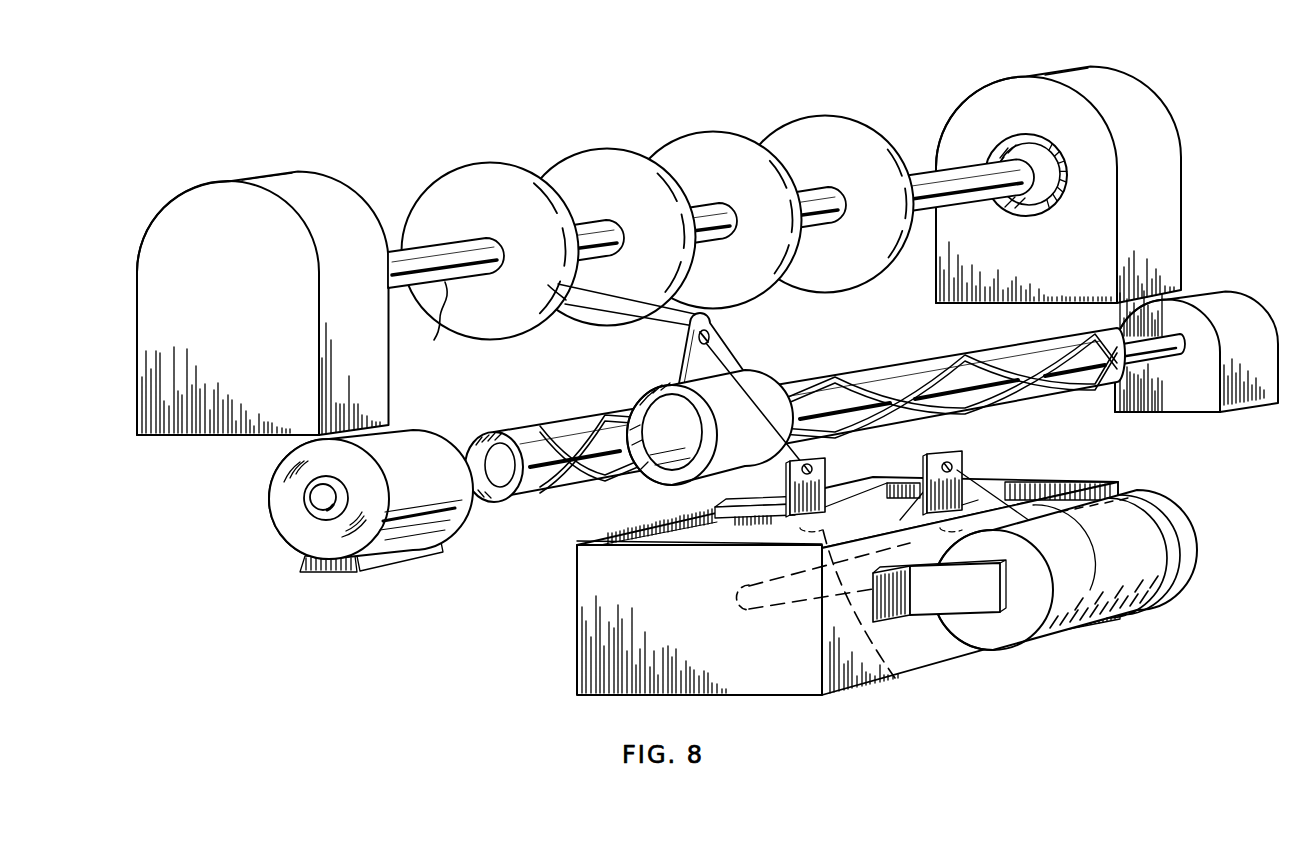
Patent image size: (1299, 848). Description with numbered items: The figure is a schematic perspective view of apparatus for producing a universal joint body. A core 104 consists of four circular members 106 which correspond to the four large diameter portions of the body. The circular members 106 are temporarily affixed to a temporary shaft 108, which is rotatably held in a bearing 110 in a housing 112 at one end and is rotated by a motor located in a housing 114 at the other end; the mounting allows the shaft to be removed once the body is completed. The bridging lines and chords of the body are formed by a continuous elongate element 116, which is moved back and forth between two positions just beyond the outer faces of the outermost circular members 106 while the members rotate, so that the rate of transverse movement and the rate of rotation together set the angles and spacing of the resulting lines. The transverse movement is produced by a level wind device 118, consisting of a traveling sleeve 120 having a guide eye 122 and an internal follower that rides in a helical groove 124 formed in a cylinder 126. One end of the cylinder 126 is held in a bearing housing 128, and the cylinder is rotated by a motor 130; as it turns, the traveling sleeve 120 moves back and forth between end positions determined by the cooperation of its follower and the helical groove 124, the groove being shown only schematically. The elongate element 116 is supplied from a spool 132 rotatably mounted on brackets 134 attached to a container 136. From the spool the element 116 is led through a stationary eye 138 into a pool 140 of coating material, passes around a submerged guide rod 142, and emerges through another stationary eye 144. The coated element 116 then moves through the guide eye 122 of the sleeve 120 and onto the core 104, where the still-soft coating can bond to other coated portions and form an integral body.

The core 104 is at (697, 212).
The circular members 106 is at (818, 116).
The temporary shaft 108 is at (492, 327).
The bearing 110 is at (1025, 142).
The housing 112 is at (958, 110).
The housing 114 is at (226, 180).
The continuous elongate element 116 is at (590, 305).
The level wind device 118 is at (839, 413).
The traveling sleeve 120 is at (777, 378).
The guide eye 122 is at (710, 340).
The helical groove 124 is at (613, 456).
The cylinder 126 is at (980, 404).
The bearing housing 128 is at (1262, 396).
The motor 130 is at (404, 538).
The spool 132 is at (1181, 592).
The brackets 134 is at (982, 602).
The container 136 is at (753, 670).
The stationary eye 138 is at (930, 464).
The pool of coating material 140 is at (735, 537).
The submerged guide rod 142 is at (897, 680).
The stationary eye 144 is at (816, 466).